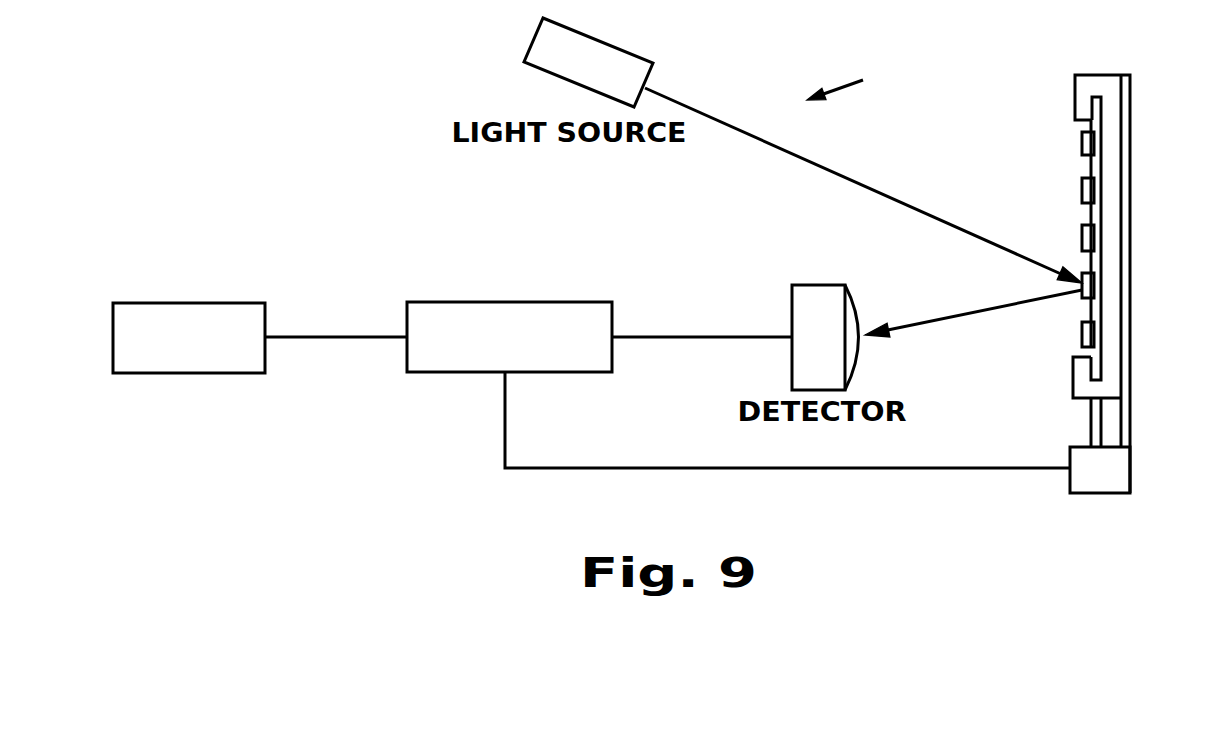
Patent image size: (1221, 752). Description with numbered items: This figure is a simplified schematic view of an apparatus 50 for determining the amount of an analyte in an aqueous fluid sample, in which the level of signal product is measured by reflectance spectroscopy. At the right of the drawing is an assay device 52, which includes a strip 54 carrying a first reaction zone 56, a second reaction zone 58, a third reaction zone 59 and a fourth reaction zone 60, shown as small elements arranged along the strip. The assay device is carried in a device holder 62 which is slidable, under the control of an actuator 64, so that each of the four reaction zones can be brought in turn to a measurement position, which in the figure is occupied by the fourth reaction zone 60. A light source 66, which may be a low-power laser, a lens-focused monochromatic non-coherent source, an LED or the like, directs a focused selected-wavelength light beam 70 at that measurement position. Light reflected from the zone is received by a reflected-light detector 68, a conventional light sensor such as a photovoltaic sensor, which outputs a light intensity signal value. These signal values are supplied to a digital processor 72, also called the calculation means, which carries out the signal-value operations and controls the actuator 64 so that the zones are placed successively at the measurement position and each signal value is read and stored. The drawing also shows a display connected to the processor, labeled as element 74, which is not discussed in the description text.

The apparatus 50 is at (856, 80).
The assay device 52 is at (1094, 112).
The strip 54 is at (1130, 297).
The first reaction zone 56 is at (1083, 140).
The second reaction zone 58 is at (1083, 193).
The third reaction zone 59 is at (1081, 342).
The fourth reaction zone 60 is at (1080, 287).
The device holder 62 is at (1102, 392).
The actuator 64 is at (1083, 483).
The light source 66 is at (547, 53).
The reflected-light detector 68 is at (863, 348).
The light beam 70 is at (810, 167).
The digital processor 72 is at (467, 372).
The display 74 is at (157, 373).